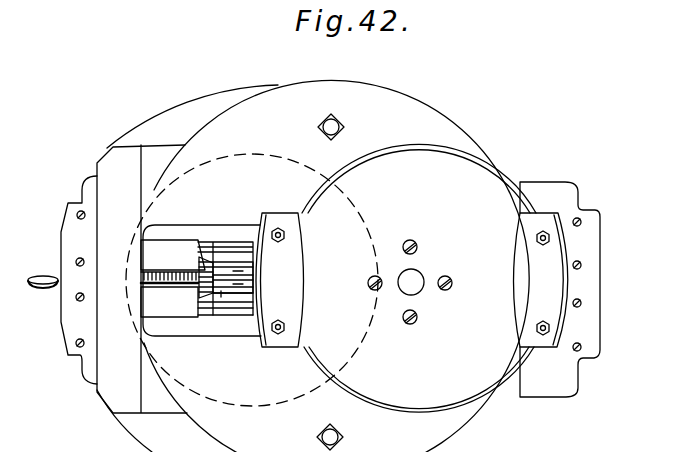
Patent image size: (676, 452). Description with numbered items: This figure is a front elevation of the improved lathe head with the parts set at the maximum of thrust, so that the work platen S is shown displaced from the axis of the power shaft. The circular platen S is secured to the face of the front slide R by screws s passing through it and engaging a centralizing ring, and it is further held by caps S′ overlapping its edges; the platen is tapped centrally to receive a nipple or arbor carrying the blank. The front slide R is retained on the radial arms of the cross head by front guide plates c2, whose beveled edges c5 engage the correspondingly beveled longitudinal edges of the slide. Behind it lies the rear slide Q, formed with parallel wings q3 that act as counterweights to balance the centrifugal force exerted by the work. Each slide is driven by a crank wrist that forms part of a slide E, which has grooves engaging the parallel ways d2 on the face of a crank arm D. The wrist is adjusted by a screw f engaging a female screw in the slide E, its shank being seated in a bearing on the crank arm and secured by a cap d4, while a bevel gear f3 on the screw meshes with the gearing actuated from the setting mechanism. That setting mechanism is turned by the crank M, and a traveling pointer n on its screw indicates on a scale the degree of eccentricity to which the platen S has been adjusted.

The front guide plate c2 is at (336, 266).
The parallel wings q3 is at (187, 268).
The rear slide Q is at (142, 279).
The crank M is at (36, 273).
The beveled edges c5 is at (184, 218).
The slide E is at (173, 255).
The screw f is at (169, 294).
The bevel gear f3 is at (213, 291).
The parallel ways d2 is at (251, 237).
The crank arm D is at (212, 235).
The traveling pointer n is at (233, 303).
The cap d4 is at (216, 307).
The work platen S is at (440, 249).
The screw s is at (422, 236).
The cap S′ is at (412, 280).
The front slide R is at (560, 301).